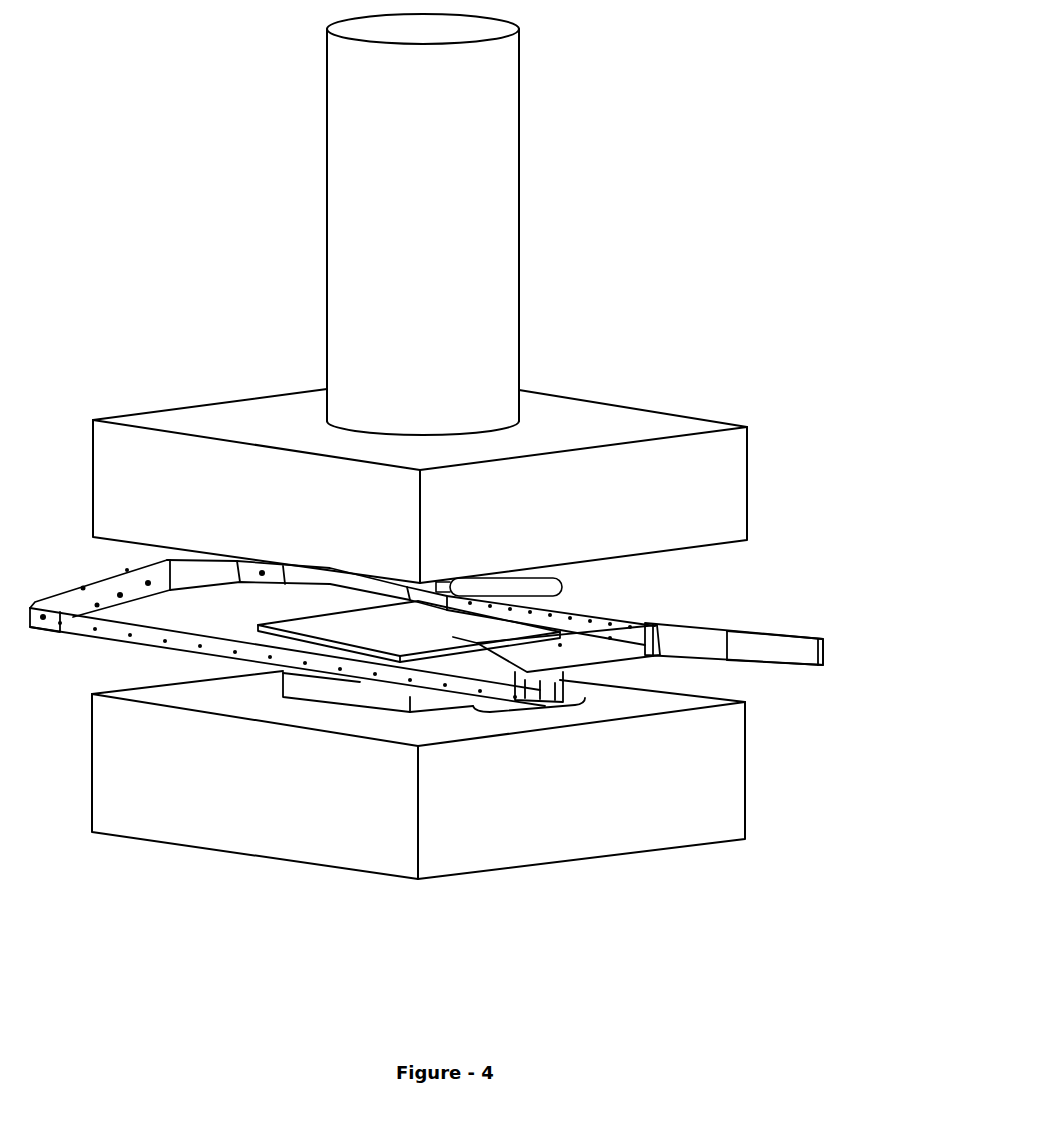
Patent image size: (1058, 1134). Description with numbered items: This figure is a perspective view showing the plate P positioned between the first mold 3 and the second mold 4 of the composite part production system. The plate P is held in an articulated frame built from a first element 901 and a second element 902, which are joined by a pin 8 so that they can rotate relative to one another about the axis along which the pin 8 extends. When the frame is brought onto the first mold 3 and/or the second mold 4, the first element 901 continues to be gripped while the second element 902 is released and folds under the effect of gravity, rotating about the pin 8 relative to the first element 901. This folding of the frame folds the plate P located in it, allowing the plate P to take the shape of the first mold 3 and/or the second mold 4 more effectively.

The second mold 4 is at (698, 472).
The pin 8 is at (660, 657).
The plate P is at (415, 632).
The first element 901 is at (700, 640).
The second element 902 is at (758, 643).
The first mold 3 is at (515, 823).